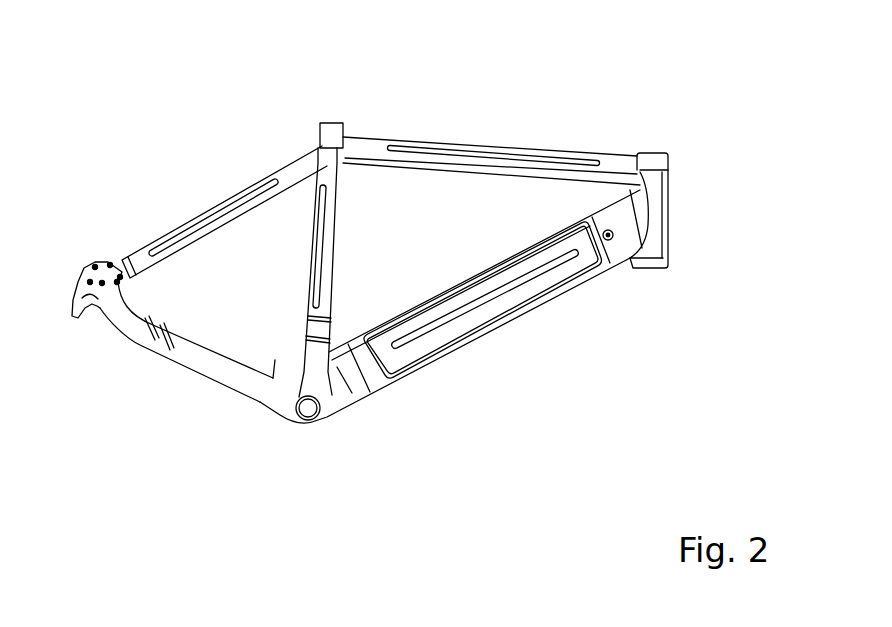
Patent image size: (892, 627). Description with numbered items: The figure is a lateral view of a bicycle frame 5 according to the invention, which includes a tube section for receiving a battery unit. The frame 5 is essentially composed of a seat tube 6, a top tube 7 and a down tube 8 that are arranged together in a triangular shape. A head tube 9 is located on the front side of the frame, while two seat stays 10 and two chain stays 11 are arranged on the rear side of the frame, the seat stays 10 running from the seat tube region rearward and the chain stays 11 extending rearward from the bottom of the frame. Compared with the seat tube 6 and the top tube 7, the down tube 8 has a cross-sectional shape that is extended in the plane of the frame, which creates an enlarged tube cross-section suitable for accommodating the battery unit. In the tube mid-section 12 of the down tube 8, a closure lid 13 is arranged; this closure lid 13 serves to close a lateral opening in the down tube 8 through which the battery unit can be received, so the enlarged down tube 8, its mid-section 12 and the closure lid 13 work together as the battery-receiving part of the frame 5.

The bicycle frame 5 is at (683, 70).
The seat tube 6 is at (325, 262).
The top tube 7 is at (438, 167).
The down tube 8 is at (398, 420).
The head tube 9 is at (657, 215).
The seat stays 10 is at (195, 220).
The chain stays 11 is at (185, 350).
The tube mid-section 12 is at (477, 360).
The closure lid 13 is at (520, 295).